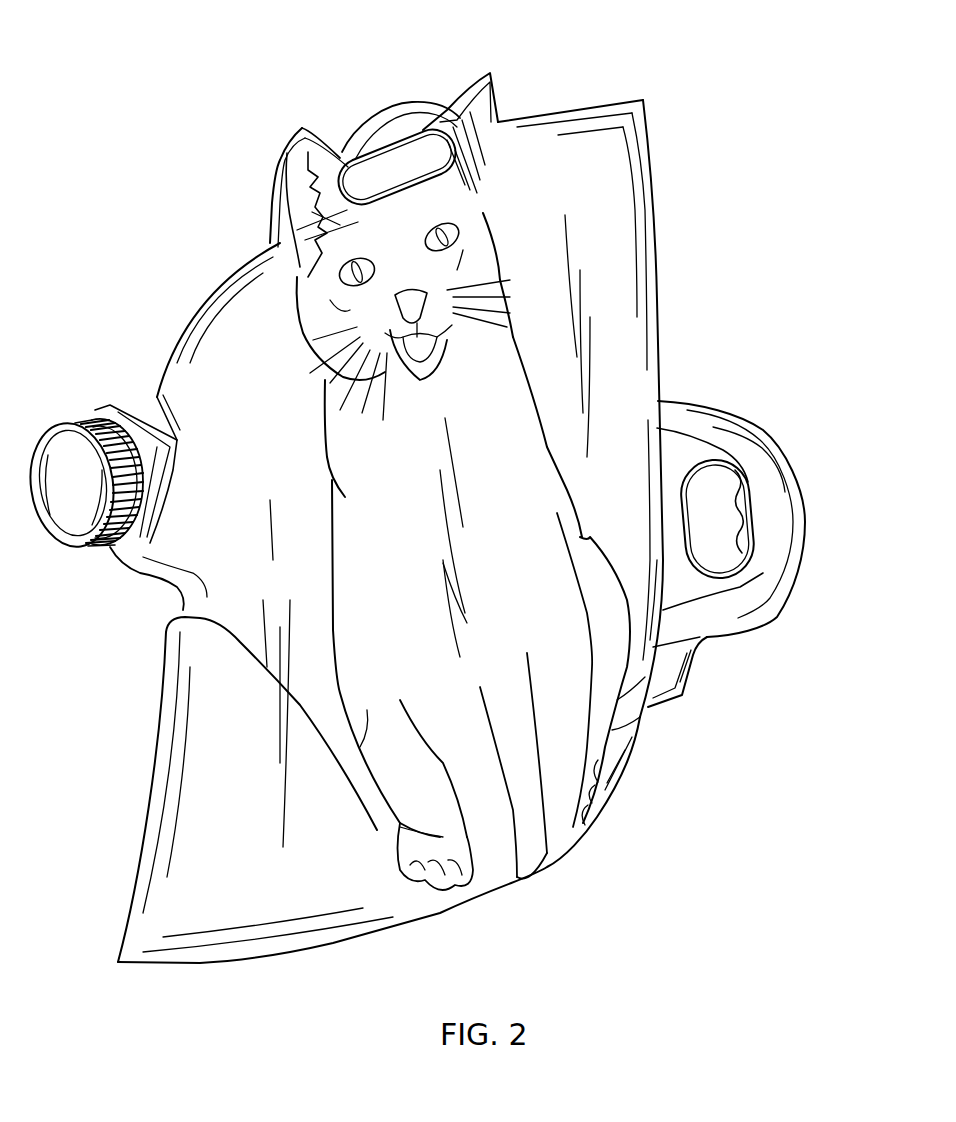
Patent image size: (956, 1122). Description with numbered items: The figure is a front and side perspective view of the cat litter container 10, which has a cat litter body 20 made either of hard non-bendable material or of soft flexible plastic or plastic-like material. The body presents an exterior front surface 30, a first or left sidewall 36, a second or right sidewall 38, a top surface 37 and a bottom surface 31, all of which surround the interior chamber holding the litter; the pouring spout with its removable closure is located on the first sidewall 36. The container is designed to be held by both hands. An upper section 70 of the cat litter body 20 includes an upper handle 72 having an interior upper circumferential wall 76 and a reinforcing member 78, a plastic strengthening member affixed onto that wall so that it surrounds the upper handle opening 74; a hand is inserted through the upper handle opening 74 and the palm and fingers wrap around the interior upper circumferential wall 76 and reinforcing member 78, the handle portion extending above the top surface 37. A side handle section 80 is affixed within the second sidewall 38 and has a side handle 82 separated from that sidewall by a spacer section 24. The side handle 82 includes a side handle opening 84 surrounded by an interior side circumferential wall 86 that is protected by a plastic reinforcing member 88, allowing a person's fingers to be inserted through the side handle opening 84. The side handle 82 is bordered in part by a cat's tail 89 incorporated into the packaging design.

The cat litter container 10 is at (724, 146).
The cat litter body 20 is at (656, 203).
The spacer section 24 is at (697, 586).
The exterior front surface 30 is at (562, 341).
The bottom surface 31 is at (560, 855).
The first sidewall 36 is at (180, 336).
The top surface 37 is at (540, 120).
The second sidewall 38 is at (659, 270).
The upper section 70 is at (372, 77).
The upper handle 72 is at (342, 167).
The upper handle opening 74 is at (388, 157).
The interior upper circumferential wall 76 is at (417, 137).
The reinforcing member 78 is at (360, 157).
The side handle section 80 is at (770, 364).
The side handle 82 is at (752, 550).
The side handle opening 84 is at (713, 483).
The interior side circumferential wall 86 is at (678, 397).
The reinforcing member 88 is at (750, 493).
The cat's tail 89 is at (786, 553).